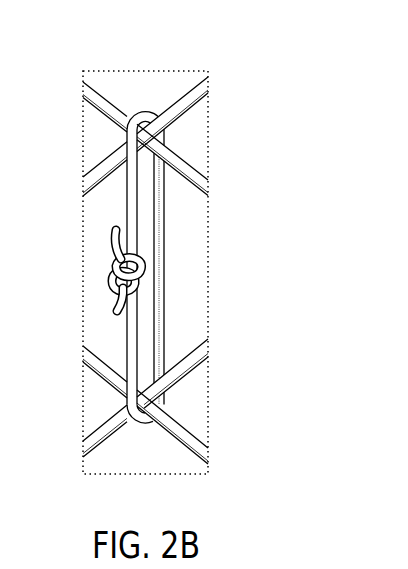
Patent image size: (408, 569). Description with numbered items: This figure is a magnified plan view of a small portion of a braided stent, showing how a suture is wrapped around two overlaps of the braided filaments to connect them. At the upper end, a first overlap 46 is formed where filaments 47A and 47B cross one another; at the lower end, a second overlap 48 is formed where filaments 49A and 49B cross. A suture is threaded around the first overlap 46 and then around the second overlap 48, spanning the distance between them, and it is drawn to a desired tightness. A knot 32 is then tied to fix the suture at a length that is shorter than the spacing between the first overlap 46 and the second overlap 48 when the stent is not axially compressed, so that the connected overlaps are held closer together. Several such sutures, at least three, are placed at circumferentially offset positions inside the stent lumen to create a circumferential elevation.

The knot 32 is at (110, 265).
The first overlap 46 is at (165, 113).
The filament 47A is at (198, 92).
The filament 47B is at (97, 96).
The second overlap 48 is at (147, 406).
The filament 49A is at (86, 447).
The filament 49B is at (204, 448).